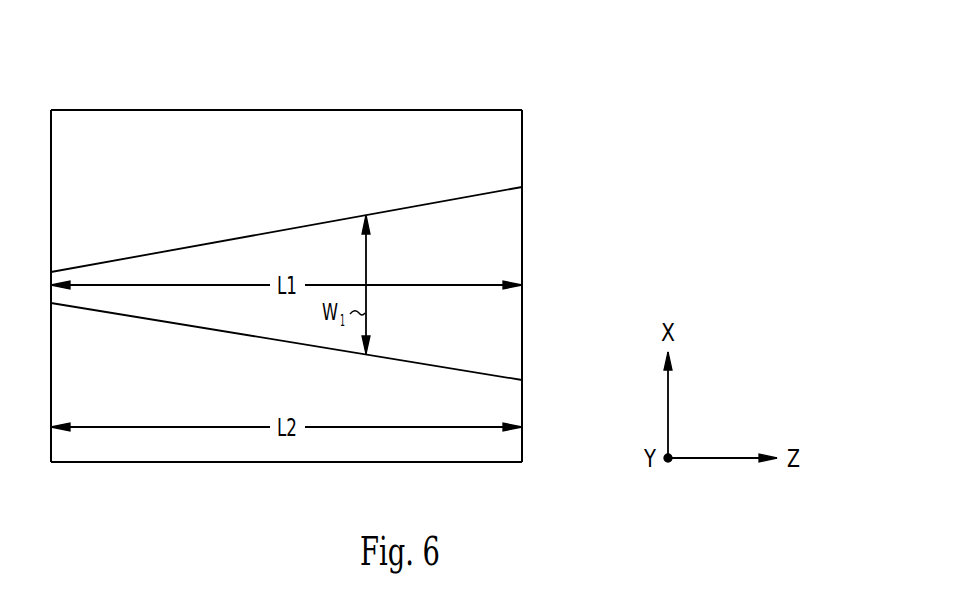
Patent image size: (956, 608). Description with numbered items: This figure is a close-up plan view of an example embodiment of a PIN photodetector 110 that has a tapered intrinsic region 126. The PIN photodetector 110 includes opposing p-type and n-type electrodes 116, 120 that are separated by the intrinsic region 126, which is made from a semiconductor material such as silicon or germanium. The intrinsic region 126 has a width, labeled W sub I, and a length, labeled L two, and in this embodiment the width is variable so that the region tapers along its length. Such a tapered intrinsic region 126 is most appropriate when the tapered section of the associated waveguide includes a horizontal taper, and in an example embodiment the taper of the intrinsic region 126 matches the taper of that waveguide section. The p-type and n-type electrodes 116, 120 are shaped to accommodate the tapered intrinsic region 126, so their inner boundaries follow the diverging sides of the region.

The PIN photodetector 110 is at (458, 54).
The p-type electrode 116 is at (288, 117).
The n-type electrode 120 is at (427, 462).
The intrinsic region 126 is at (511, 226).